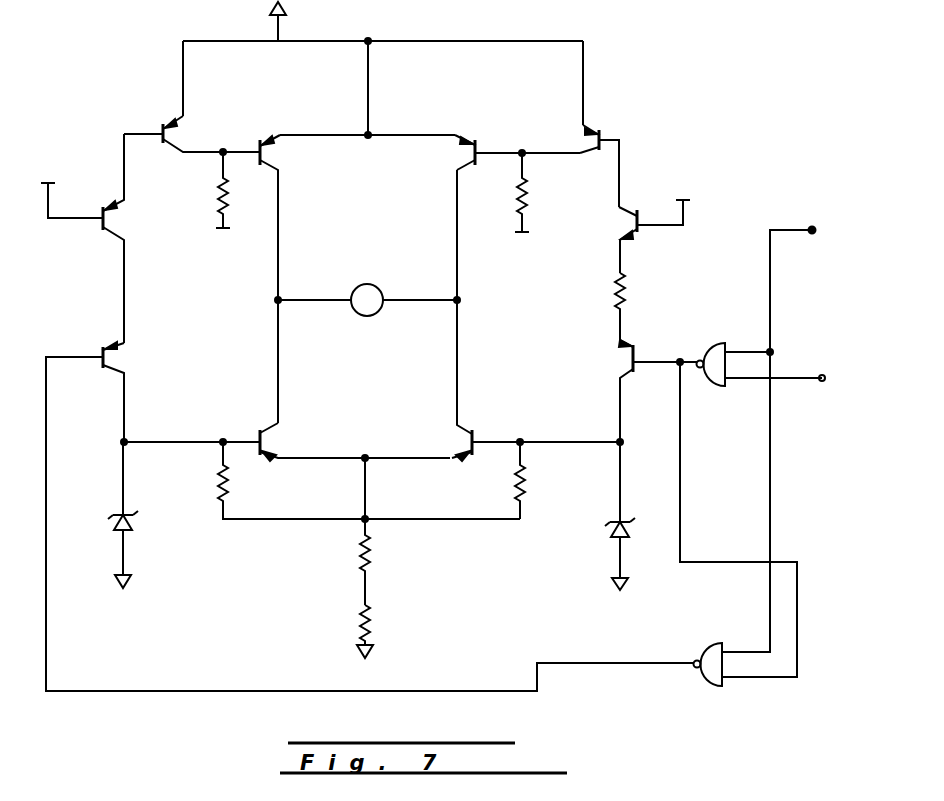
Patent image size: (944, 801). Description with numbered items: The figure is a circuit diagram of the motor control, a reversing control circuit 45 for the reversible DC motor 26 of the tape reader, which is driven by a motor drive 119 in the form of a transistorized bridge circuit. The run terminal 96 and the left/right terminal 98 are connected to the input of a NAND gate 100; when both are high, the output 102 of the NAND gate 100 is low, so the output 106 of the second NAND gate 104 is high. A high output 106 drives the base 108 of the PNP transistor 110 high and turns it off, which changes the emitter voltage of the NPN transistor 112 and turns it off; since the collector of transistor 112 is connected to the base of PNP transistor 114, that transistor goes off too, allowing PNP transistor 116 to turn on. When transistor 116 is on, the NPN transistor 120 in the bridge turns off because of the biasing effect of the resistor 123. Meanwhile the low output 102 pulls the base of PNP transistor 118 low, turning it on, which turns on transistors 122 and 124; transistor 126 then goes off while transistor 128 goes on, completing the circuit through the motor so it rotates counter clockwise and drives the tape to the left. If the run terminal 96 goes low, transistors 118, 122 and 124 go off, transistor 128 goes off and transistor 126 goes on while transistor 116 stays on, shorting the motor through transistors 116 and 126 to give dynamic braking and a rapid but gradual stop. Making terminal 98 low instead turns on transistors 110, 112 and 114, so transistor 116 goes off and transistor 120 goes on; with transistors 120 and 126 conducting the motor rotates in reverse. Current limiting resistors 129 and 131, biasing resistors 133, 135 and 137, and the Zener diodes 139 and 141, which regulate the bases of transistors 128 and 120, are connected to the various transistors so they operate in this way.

The reversing control circuit 45 is at (690, 47).
The motor 26 is at (367, 284).
The run terminal 96 is at (812, 228).
The left/right terminal 98 is at (821, 384).
The NAND gate 100 is at (722, 343).
The output of NAND gate 100 102 is at (697, 360).
The NAND gate 104 is at (716, 644).
The output of NAND gate 104 106 is at (694, 661).
The base of PNP transistor 110 108 is at (100, 368).
The PNP transistor 110 is at (93, 348).
The NPN transistor 112 is at (99, 210).
The PNP transistor 114 is at (157, 127).
The PNP transistor 116 is at (256, 143).
The PNP transistor 118 is at (626, 360).
The motor drive 119 is at (216, 195).
The NPN transistor 120 is at (272, 441).
The PNP transistor 122 is at (642, 207).
The 3.9K resistor 123 is at (216, 486).
The NPN transistor 124 is at (604, 132).
The transistor 126 is at (503, 118).
The transistor 128 is at (478, 437).
The 5.1 ohm resistor 129 is at (372, 620).
The 5.1 ohm resistor 131 is at (375, 548).
The 3.9K resistor 133 is at (528, 484).
The 3K resistor 135 is at (615, 288).
The 10K resistor 137 is at (530, 196).
The Zener diode 139 is at (614, 525).
The Zener diode 141 is at (132, 530).